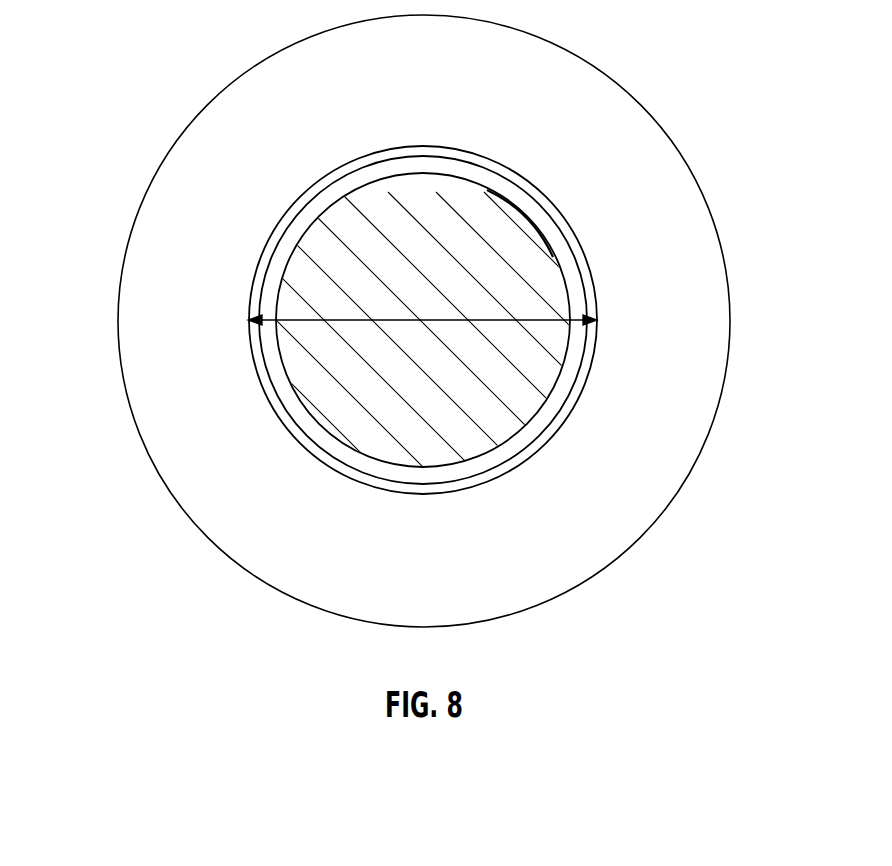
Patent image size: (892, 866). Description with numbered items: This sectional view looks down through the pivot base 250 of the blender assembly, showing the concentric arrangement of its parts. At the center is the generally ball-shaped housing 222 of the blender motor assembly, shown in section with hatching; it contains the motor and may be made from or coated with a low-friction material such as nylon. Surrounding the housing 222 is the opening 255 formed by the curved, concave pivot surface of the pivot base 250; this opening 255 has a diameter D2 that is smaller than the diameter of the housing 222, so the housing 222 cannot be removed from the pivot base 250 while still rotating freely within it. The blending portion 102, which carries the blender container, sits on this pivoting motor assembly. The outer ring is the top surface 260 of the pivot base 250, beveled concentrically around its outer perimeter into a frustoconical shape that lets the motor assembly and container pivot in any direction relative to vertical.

The pivot base 250 is at (655, 520).
The top surface 260 is at (593, 120).
The opening 255 is at (285, 222).
The blending portion 102 is at (262, 352).
The housing 222 is at (535, 300).
The diameter of opening D2 is at (413, 320).